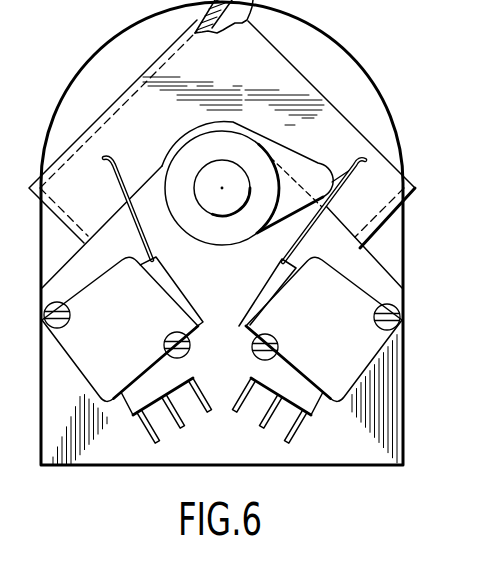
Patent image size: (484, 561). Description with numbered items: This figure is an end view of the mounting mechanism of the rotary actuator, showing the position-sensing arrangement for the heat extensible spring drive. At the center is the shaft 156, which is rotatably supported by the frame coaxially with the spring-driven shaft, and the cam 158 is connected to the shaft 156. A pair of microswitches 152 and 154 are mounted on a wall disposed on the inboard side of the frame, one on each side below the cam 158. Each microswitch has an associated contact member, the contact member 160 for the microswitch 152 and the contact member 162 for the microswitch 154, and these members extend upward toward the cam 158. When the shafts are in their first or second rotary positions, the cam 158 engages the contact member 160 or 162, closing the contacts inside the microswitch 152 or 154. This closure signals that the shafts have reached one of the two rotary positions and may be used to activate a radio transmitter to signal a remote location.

The microswitch 152 is at (331, 334).
The microswitch 154 is at (122, 334).
The shaft 156 is at (212, 161).
The cam 158 is at (318, 170).
The contact member 160 is at (365, 162).
The contact member 162 is at (112, 156).